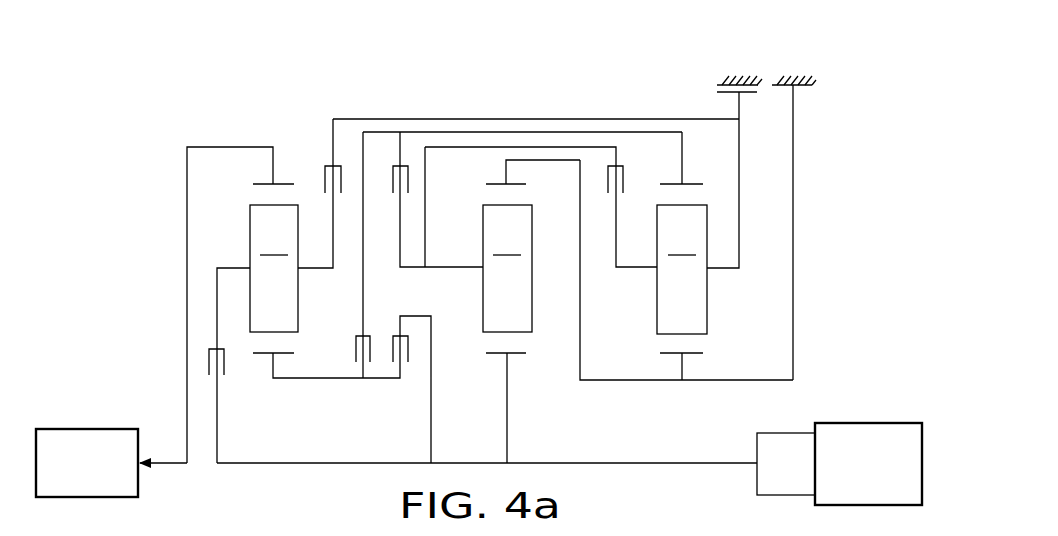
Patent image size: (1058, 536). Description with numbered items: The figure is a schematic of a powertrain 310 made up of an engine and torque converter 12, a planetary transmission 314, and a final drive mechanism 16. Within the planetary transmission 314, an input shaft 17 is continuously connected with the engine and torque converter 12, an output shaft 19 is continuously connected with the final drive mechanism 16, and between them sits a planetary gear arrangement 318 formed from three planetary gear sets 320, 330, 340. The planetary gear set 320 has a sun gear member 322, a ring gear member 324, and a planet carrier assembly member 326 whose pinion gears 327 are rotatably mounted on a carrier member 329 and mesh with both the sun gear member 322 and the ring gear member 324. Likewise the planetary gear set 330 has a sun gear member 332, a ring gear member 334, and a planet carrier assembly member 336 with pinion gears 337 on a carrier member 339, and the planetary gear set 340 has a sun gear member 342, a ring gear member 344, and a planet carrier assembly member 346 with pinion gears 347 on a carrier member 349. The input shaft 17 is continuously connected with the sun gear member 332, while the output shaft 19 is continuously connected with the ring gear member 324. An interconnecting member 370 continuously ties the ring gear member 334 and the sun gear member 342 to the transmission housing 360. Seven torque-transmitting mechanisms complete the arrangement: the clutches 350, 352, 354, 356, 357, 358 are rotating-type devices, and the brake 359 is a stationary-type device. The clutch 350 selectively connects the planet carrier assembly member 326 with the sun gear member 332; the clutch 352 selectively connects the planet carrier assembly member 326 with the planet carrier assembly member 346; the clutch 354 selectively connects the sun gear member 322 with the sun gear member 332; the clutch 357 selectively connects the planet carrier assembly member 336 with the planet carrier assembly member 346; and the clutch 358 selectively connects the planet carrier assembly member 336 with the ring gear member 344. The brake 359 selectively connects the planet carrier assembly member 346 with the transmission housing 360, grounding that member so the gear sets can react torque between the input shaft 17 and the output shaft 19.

The engine and torque converter 12 is at (848, 406).
The final drive mechanism 16 is at (102, 414).
The input shaft 17 is at (732, 466).
The output shaft 19 is at (175, 467).
The powertrain 310 is at (148, 152).
The planetary transmission 314 is at (508, 102).
The planetary gear arrangement 318 is at (567, 100).
The planetary gear set 320 is at (262, 358).
The sun gear member 322 is at (285, 357).
The ring gear member 324 is at (265, 182).
The planet carrier assembly member 326 is at (238, 260).
The pinion gears 327 is at (274, 268).
The carrier member 329 is at (238, 265).
The planetary gear set 330 is at (497, 357).
The sun gear member 332 is at (517, 357).
The ring gear member 334 is at (497, 182).
The planet carrier assembly member 336 is at (478, 275).
The pinion gears 337 is at (507, 268).
The carrier member 339 is at (472, 273).
The planetary gear set 340 is at (672, 358).
The sun gear member 342 is at (695, 356).
The ring gear member 344 is at (672, 182).
The planet carrier assembly member 346 is at (718, 282).
The pinion gears 347 is at (682, 269).
The carrier member 349 is at (727, 270).
The clutch 350 is at (203, 338).
The clutch 352 is at (319, 163).
The clutch 354 is at (392, 367).
The clutch 356 is at (354, 367).
The clutch 357 is at (606, 163).
The clutch 358 is at (394, 163).
The brake 359 is at (714, 86).
The transmission housing 360 is at (717, 82).
The interconnecting member 370 is at (578, 293).